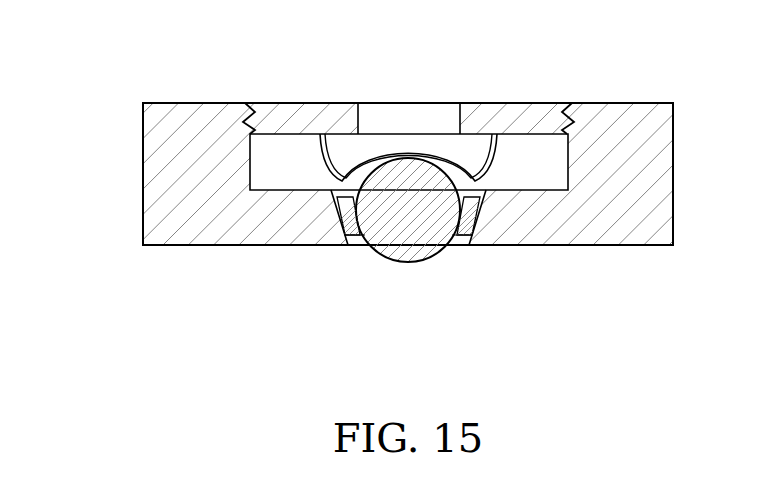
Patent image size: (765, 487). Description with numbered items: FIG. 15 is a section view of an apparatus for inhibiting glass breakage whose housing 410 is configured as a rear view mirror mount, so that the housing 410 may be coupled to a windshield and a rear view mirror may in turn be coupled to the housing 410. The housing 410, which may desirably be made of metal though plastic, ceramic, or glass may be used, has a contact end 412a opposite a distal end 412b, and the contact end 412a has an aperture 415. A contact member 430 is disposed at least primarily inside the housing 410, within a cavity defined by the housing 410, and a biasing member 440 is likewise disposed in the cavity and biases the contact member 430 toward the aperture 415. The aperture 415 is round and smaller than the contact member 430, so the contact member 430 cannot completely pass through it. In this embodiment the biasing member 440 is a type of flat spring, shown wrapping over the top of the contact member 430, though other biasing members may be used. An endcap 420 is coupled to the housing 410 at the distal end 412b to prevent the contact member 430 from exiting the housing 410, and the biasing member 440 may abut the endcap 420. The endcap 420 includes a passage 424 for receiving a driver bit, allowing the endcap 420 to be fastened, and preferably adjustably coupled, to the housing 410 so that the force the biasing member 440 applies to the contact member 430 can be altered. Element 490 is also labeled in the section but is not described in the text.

The housing 410 is at (382, 184).
The contact end 412a is at (614, 260).
The distal end 412b is at (636, 87).
The aperture 415 is at (360, 247).
The endcap 420 is at (515, 90).
The passage 424 is at (401, 117).
The contact member 430 is at (408, 240).
The biasing member 440 is at (487, 153).
The retainer wedge 490 is at (468, 222).